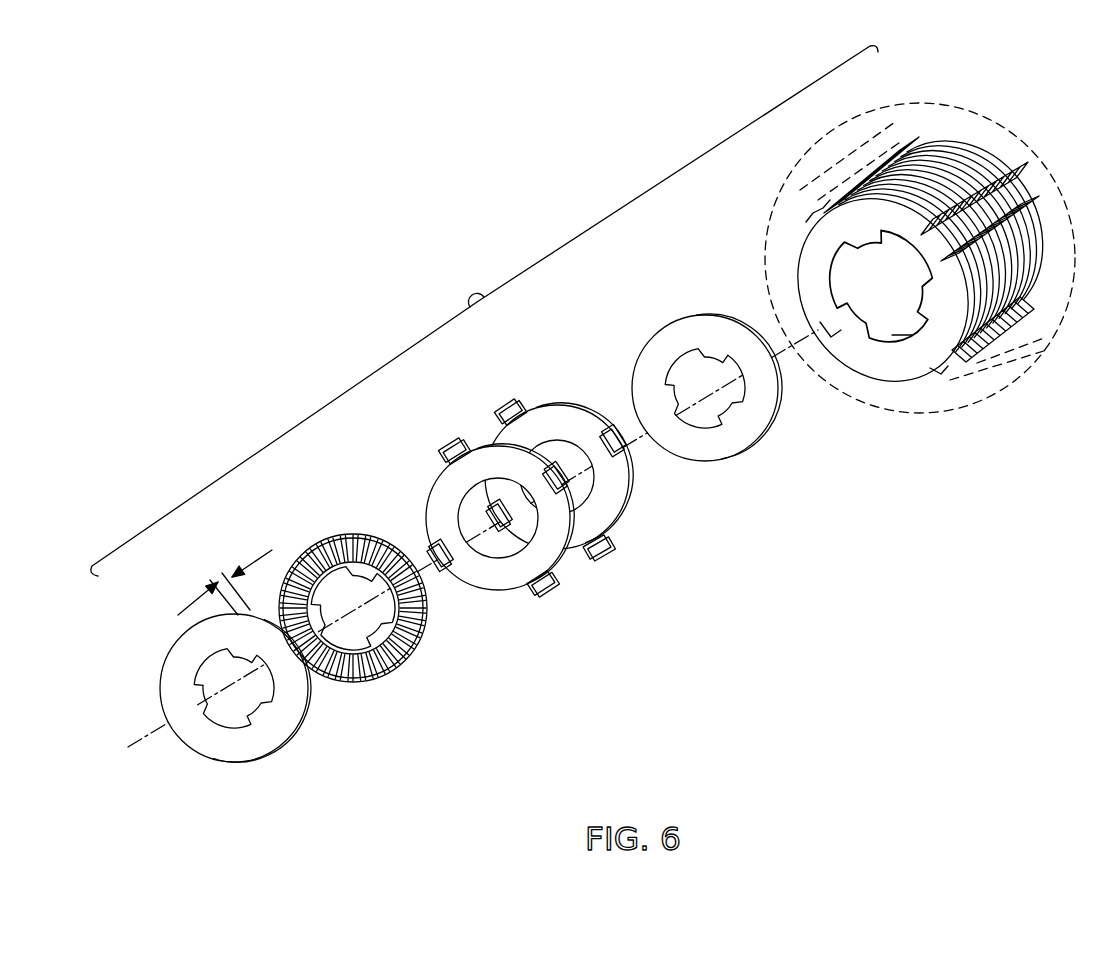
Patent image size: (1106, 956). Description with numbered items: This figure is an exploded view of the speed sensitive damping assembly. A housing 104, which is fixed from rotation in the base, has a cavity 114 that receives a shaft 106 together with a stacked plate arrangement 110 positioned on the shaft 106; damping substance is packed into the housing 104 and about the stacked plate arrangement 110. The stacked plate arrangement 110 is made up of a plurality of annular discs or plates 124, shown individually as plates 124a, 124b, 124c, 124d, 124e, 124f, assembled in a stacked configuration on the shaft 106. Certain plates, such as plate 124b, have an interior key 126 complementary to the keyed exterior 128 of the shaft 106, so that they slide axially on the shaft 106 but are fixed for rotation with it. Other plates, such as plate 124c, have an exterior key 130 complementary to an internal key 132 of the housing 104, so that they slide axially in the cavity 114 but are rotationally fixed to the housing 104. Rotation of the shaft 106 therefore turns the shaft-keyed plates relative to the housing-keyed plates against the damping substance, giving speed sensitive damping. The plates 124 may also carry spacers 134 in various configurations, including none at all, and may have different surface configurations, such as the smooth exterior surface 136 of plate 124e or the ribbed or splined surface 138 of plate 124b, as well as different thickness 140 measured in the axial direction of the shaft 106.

The housing 104 is at (1008, 338).
The shaft 106 is at (880, 333).
The stacked plate arrangement 110 is at (925, 142).
The cavity 114 is at (888, 370).
The plates 124 is at (484, 311).
The plate 124a is at (265, 765).
The plate 124b is at (400, 683).
The plate 124c is at (540, 600).
The plate 124d is at (607, 568).
The plate 124e is at (757, 492).
The plate 124f is at (905, 352).
The interior key 126 is at (200, 717).
The keyed exterior 128 is at (903, 352).
The exterior key 130 is at (462, 448).
The internal key 132 is at (805, 205).
The spacer 134 is at (606, 538).
The smooth exterior surface 136 is at (234, 752).
The ribbed or splined surface 138 is at (375, 685).
The thickness 140 is at (255, 560).